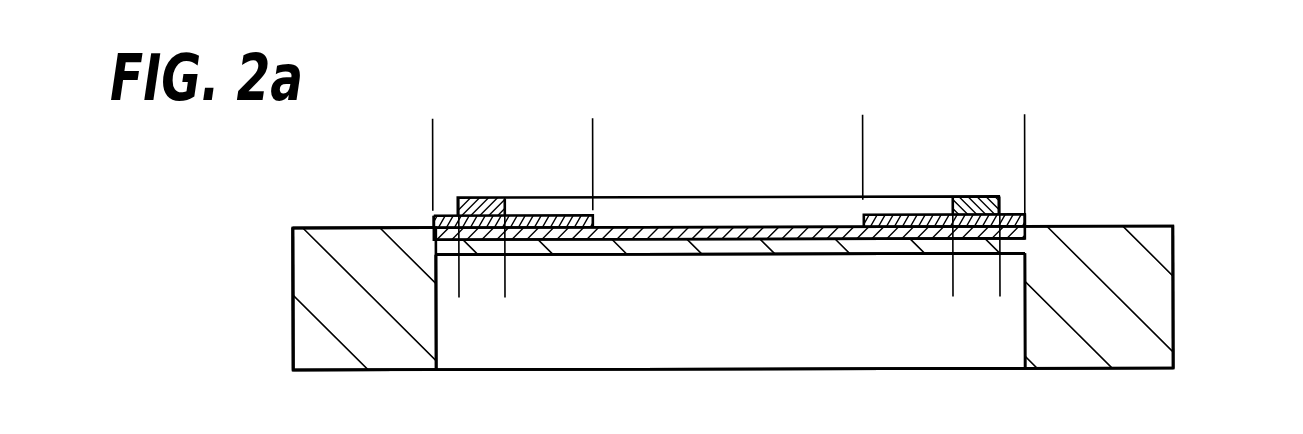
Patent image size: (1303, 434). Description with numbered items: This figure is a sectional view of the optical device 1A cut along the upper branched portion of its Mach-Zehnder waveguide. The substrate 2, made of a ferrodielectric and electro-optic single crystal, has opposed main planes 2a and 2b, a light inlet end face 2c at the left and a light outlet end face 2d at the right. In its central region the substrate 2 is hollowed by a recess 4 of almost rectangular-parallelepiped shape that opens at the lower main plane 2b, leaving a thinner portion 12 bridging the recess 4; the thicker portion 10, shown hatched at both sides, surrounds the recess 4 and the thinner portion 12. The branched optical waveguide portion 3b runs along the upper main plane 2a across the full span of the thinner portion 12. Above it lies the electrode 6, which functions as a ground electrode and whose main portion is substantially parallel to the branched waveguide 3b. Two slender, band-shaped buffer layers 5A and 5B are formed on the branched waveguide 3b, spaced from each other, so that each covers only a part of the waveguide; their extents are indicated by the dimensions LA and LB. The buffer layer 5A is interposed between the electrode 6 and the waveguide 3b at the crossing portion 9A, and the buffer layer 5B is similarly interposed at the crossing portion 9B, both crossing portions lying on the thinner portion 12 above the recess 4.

The pressure sensor device 1A is at (1067, 186).
The substrate 2 is at (377, 248).
The main plane 2a is at (340, 227).
The main plane 2b is at (358, 370).
The light inlet end face 2c is at (293, 330).
The light outlet end face 2d is at (1173, 297).
The branched optical waveguide portion 3b is at (780, 230).
The recess 4 is at (697, 254).
The buffer layer 5A is at (552, 215).
The buffer layer 5B is at (913, 203).
The electrode 6 is at (487, 200).
The crossing portion 9A is at (493, 290).
The crossing portion 9B is at (988, 288).
The thick support portion 10 is at (317, 272).
The thinner portion 12 is at (700, 247).
The length LA is at (579, 138).
The length LB is at (1011, 137).